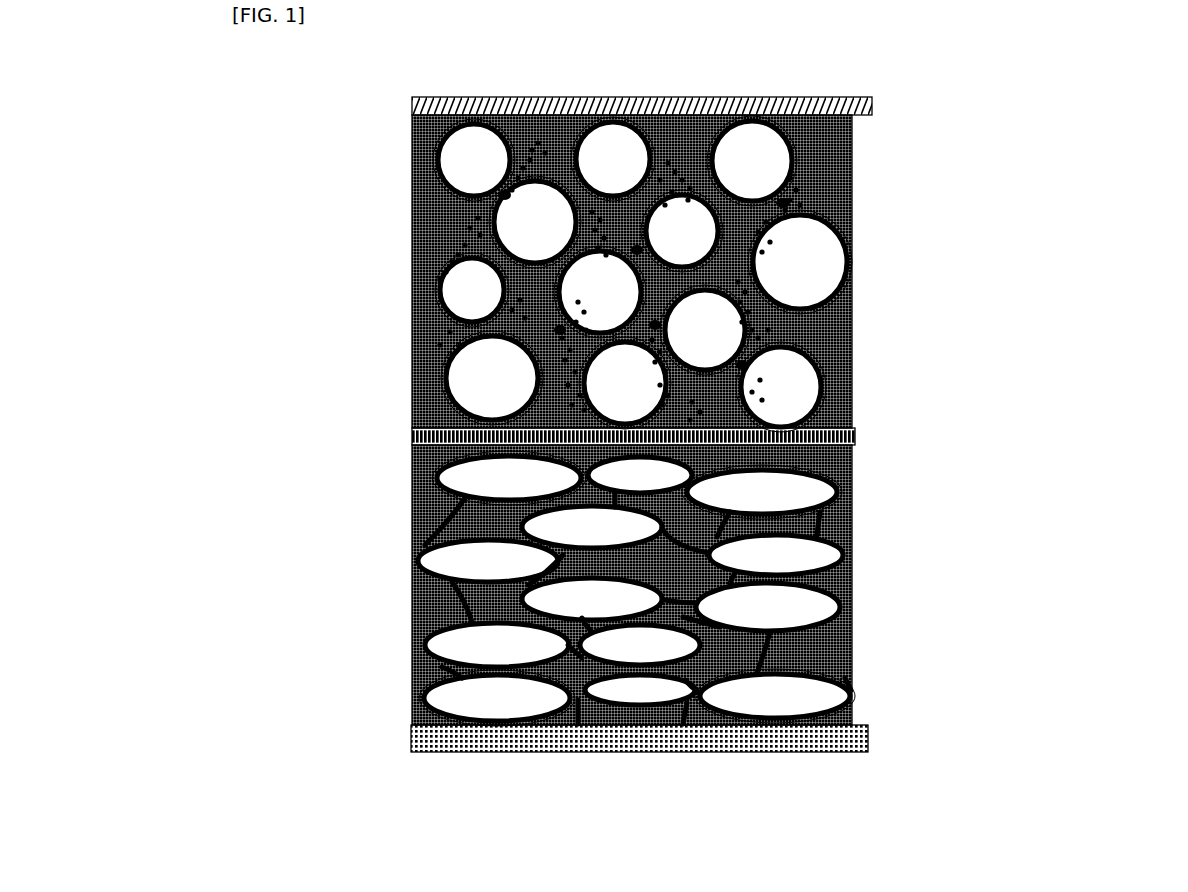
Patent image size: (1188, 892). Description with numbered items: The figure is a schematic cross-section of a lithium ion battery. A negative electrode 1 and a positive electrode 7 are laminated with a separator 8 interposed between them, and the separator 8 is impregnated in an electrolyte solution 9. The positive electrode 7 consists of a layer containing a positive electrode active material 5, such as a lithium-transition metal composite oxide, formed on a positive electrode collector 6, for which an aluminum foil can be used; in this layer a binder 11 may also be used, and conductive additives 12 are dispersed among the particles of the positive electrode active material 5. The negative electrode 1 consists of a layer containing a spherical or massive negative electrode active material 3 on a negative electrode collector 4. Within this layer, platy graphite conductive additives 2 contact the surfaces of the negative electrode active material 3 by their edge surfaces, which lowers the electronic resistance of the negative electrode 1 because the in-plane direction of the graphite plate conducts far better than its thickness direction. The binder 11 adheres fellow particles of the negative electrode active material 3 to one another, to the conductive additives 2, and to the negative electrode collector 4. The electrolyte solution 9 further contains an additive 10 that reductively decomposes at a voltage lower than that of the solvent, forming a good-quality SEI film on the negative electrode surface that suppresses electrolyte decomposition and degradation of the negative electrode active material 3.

The negative electrode 1 is at (410, 748).
The platy graphite conductive additives 2 is at (823, 520).
The negative electrode active material 3 is at (817, 602).
The negative electrode collector 4 is at (843, 733).
The positive electrode active material 5 is at (807, 249).
The positive electrode collector 6 is at (615, 100).
The positive electrode 7 is at (410, 428).
The separator 8 is at (410, 435).
The electrolyte solution 9 is at (845, 410).
The additive 10 is at (855, 478).
The binder 11 is at (783, 202).
The conductive additives 12 is at (770, 332).